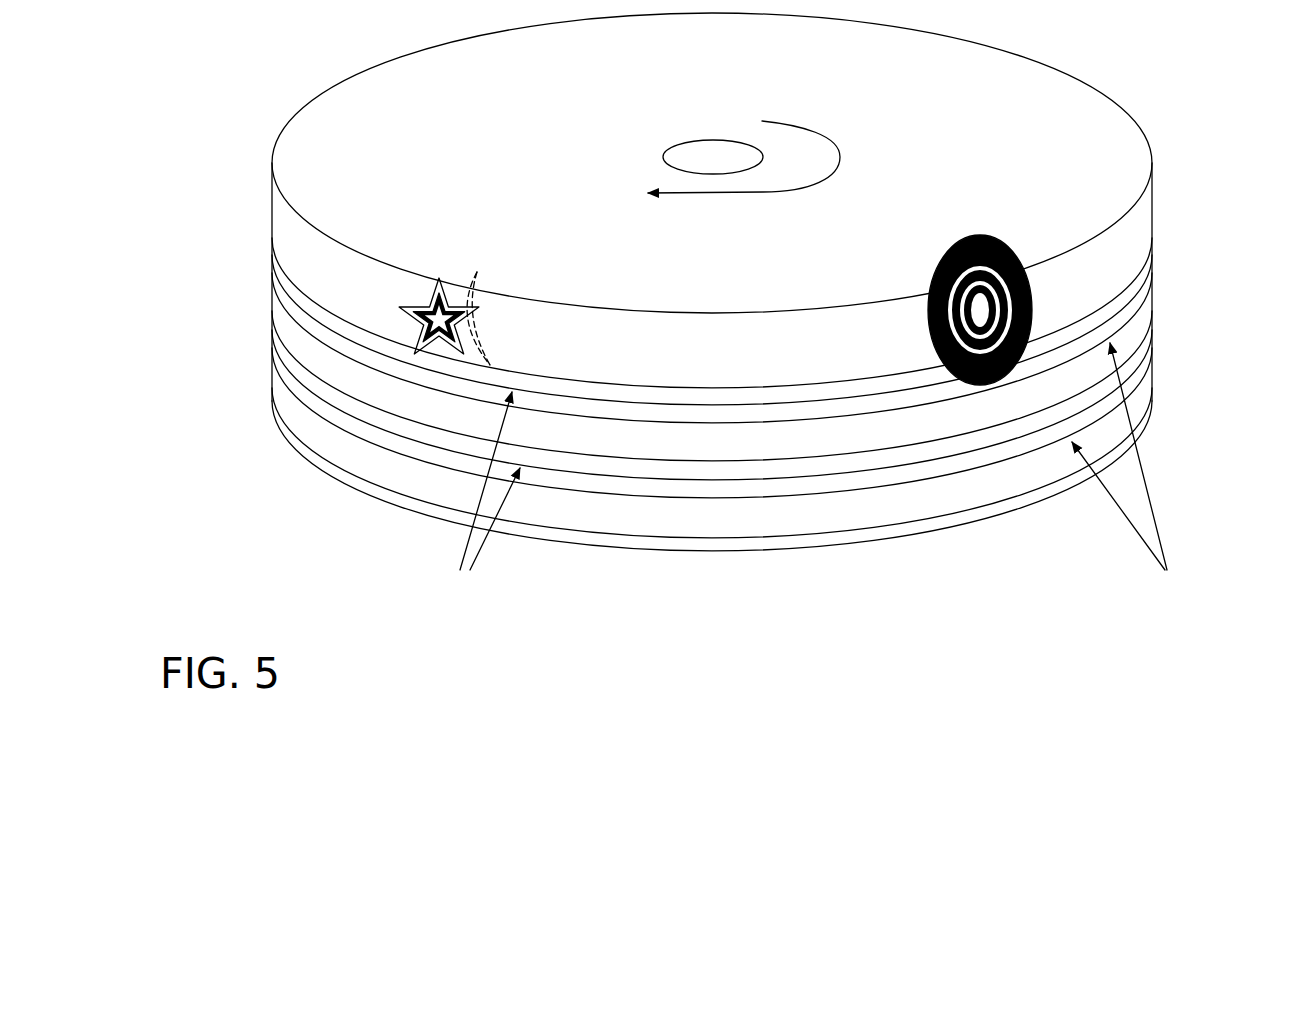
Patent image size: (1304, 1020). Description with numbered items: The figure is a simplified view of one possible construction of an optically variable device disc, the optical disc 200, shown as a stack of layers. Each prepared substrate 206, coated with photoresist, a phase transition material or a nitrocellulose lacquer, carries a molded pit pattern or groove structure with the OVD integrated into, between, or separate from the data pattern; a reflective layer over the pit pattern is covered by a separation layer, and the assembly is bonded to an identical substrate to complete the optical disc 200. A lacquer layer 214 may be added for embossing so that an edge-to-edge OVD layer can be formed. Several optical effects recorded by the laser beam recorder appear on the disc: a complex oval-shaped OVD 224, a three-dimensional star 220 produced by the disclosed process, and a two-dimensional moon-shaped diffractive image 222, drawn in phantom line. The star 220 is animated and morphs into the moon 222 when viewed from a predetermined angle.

The optical disc 200 is at (730, 592).
The substrate 206 is at (1133, 245).
The lacquer layer 214 is at (330, 482).
The three-dimensional star 220 is at (417, 311).
The moon-shaped diffractive image 222 is at (462, 303).
The oval-shaped OVD 224 is at (1000, 248).